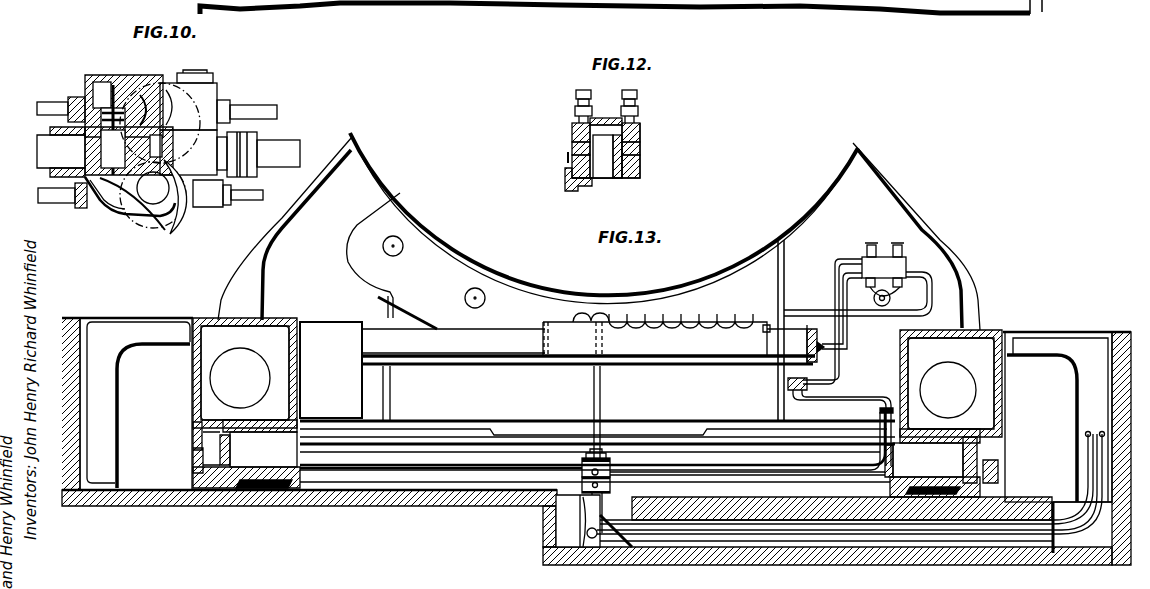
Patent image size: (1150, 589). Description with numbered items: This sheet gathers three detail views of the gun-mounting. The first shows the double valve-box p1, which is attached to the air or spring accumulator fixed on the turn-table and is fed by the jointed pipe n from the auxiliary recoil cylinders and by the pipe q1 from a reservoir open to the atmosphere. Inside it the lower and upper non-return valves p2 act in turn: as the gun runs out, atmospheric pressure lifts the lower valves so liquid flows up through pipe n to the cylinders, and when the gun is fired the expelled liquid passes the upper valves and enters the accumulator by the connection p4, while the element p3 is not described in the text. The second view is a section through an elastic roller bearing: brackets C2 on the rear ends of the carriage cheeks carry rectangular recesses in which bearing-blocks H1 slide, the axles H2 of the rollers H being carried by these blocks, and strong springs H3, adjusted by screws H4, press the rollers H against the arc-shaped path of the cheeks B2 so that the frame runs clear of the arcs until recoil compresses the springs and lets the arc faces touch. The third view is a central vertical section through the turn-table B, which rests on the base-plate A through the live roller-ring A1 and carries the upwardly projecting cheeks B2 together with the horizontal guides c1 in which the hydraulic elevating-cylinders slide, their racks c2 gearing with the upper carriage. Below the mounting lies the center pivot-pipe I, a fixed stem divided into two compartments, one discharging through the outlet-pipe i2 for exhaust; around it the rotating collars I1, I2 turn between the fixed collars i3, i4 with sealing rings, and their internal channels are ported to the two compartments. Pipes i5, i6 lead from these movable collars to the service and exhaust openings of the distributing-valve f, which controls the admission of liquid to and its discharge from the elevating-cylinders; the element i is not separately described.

In FIG. 10, the double valve-box p1 is at (119, 138).
In FIG. 10, the non-return valves p2 is at (108, 190).
In FIG. 10, the valve piston p3 is at (100, 146).
In FIG. 10, the connection p4 is at (188, 122).
In FIG. 10, the pipe n is at (168, 152).
In FIG. 10, the pipe q1 is at (162, 224).
In FIG. 12, the rollers H is at (606, 151).
In FIG. 12, the bearing-blocks H1 is at (640, 148).
In FIG. 12, the axles H2 is at (572, 158).
In FIG. 12, the springs H3 is at (575, 128).
In FIG. 12, the screws H4 is at (639, 97).
In FIG. 12, the brackets C2 is at (590, 183).
In FIG. 13, the sides or cheeks B2 is at (599, 276).
In FIG. 13, the turn-table B is at (193, 382).
In FIG. 13, the live roller-ring A1 is at (595, 451).
In FIG. 13, the base-plate A is at (265, 492).
In FIG. 13, the horizontal guides c1 is at (593, 372).
In FIG. 13, the racks c2 is at (713, 316).
In FIG. 13, the distributing-valve f is at (858, 354).
In FIG. 13, the center pivot-pipe I is at (588, 512).
In FIG. 13, the rotating collar I1 is at (582, 473).
In FIG. 13, the rotating collar I2 is at (582, 486).
In FIG. 13, the pipe i is at (612, 528).
In FIG. 13, the outlet-pipe i2 is at (607, 530).
In FIG. 13, the fixed collar i3 is at (610, 464).
In FIG. 13, the fixed collar i4 is at (610, 492).
In FIG. 13, the pipe i5 is at (745, 473).
In FIG. 13, the pipe i6 is at (602, 393).